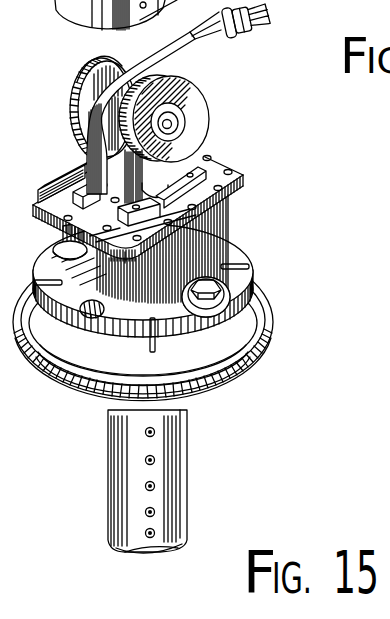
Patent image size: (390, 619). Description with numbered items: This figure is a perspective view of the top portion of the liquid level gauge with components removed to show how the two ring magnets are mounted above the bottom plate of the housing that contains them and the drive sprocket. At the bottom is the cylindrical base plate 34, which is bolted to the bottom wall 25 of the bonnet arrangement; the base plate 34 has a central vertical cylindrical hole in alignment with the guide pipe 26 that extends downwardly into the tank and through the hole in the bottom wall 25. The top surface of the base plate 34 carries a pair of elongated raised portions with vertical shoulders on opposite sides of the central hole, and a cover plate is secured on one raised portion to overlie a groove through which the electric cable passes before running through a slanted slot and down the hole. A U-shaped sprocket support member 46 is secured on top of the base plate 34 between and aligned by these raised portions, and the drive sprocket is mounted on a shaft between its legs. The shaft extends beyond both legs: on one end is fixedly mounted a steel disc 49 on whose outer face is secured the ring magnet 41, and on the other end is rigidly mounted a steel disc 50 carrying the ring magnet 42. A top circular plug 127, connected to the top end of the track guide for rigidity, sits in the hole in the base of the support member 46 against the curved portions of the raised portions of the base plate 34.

The bottom wall 25 is at (263, 350).
The guide pipe 26 is at (187, 491).
The base plate 34 is at (220, 383).
The ring magnet 41 is at (82, 97).
The ring magnet 42 is at (210, 114).
The sprocket support member 46 is at (232, 184).
The steel disc 49 is at (97, 77).
The steel disc 50 is at (182, 76).
The top circular plug 127 is at (240, 191).